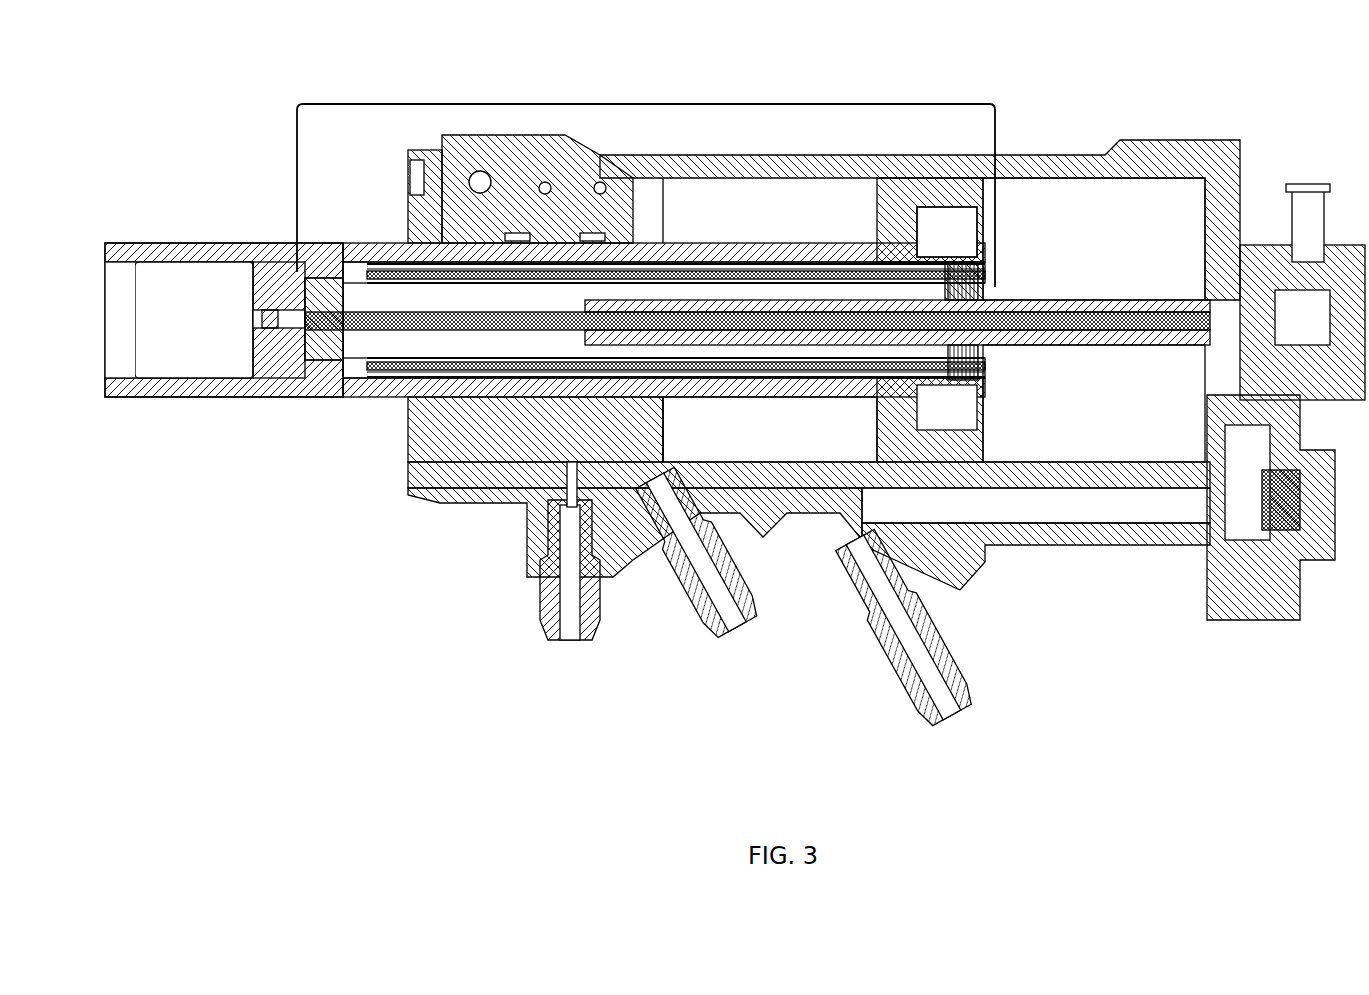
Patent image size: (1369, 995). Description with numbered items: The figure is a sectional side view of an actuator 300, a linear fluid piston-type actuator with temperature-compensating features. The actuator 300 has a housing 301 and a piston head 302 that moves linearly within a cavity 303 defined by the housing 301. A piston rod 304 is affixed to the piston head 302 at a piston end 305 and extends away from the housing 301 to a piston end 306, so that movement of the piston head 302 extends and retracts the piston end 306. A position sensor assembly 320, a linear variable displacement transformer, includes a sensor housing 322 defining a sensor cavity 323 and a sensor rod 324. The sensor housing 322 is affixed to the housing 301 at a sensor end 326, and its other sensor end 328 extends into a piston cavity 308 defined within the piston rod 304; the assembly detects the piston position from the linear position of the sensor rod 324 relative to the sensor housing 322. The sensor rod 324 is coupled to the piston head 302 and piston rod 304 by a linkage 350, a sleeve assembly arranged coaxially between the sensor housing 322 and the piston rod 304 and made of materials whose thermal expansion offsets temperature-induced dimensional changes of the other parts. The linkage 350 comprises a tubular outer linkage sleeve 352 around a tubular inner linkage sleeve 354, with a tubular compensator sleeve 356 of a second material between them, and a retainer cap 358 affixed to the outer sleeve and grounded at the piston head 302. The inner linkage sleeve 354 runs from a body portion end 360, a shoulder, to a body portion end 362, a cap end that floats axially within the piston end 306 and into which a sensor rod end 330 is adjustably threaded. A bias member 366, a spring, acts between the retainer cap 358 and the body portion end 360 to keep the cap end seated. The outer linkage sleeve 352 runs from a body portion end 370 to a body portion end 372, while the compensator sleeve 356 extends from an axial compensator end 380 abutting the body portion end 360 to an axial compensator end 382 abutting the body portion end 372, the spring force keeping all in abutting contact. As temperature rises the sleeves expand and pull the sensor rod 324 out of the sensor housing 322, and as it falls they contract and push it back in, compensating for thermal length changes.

The actuator 300 is at (268, 82).
The housing 301 is at (985, 565).
The piston head 302 is at (870, 424).
The cavity 303 is at (1135, 445).
The piston rod 304 is at (688, 405).
The piston end 305 is at (857, 402).
The piston end 306 is at (220, 397).
The piston cavity 308 is at (345, 375).
The position sensor assembly 320 is at (1040, 360).
The sensor housing 322 is at (1143, 292).
The sensor cavity 323 is at (1208, 330).
The sensor rod 324 is at (420, 330).
The sensor end 326 is at (1208, 292).
The sensor end 328 is at (1073, 347).
The sensor rod end 330 is at (333, 305).
The linkage 350 is at (652, 92).
The tubular outer linkage sleeve 352 is at (765, 260).
The tubular inner linkage sleeve 354 is at (357, 366).
The tubular compensator sleeve 356 is at (830, 268).
The retainer cap 358 is at (938, 368).
The body portion end 360 is at (945, 270).
The body portion end 362 is at (305, 300).
The bias member 366 is at (968, 295).
The body portion end 370 is at (932, 238).
The body portion end 372 is at (367, 280).
The axial compensator end 380 is at (948, 378).
The axial compensator end 382 is at (378, 268).